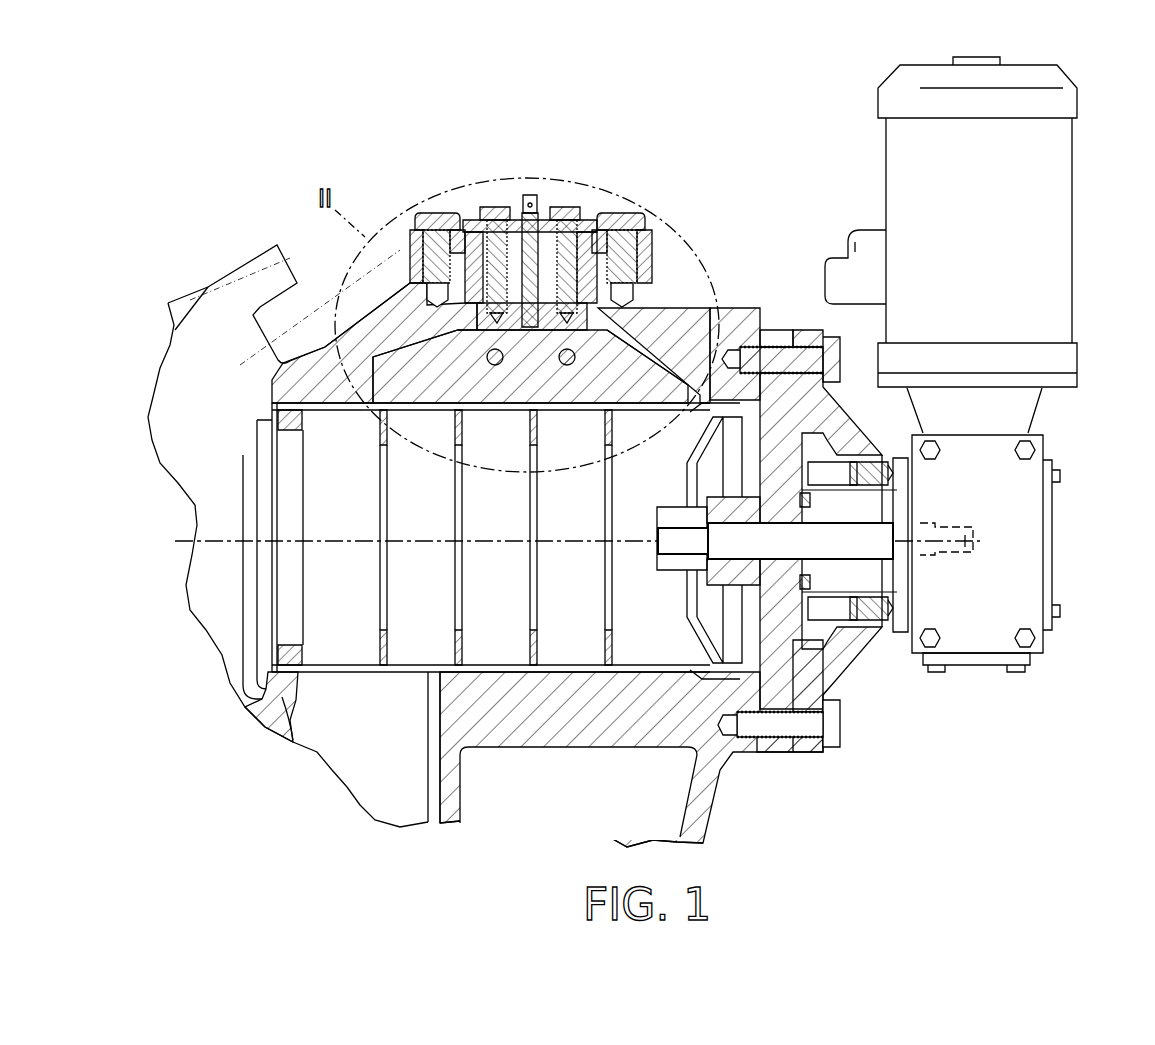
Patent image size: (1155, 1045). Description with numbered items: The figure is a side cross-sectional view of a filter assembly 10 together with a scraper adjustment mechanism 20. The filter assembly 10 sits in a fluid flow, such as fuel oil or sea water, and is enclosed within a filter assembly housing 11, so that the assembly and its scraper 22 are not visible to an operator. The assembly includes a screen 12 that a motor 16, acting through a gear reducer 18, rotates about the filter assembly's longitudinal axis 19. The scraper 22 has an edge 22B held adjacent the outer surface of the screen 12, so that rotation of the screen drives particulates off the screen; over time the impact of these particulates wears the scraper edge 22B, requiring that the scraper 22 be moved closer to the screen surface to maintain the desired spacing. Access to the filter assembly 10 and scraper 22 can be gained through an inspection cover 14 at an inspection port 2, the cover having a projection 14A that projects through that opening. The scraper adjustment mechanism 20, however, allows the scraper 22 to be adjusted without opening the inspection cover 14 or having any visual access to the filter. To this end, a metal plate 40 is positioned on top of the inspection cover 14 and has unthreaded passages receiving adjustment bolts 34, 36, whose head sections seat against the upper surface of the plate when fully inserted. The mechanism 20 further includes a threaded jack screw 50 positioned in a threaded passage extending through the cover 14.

The inspection port 2 is at (507, 464).
The filter assembly 10 is at (360, 686).
The filter assembly housing 11 is at (354, 316).
The screen 12 is at (742, 309).
The inspection cover 14 is at (661, 222).
The projection 14A is at (593, 292).
The motor 16 is at (1048, 182).
The gear reducer 18 is at (1030, 508).
The longitudinal axis 19 is at (215, 545).
The scraper adjustment mechanism 20 is at (613, 172).
The scraper 22 is at (648, 345).
The scraper edge 22B is at (683, 377).
The adjustment bolt 34 is at (644, 191).
The adjustment bolt 36 is at (447, 198).
The metal plate 40 is at (592, 203).
The threaded jack screw 50 is at (532, 183).